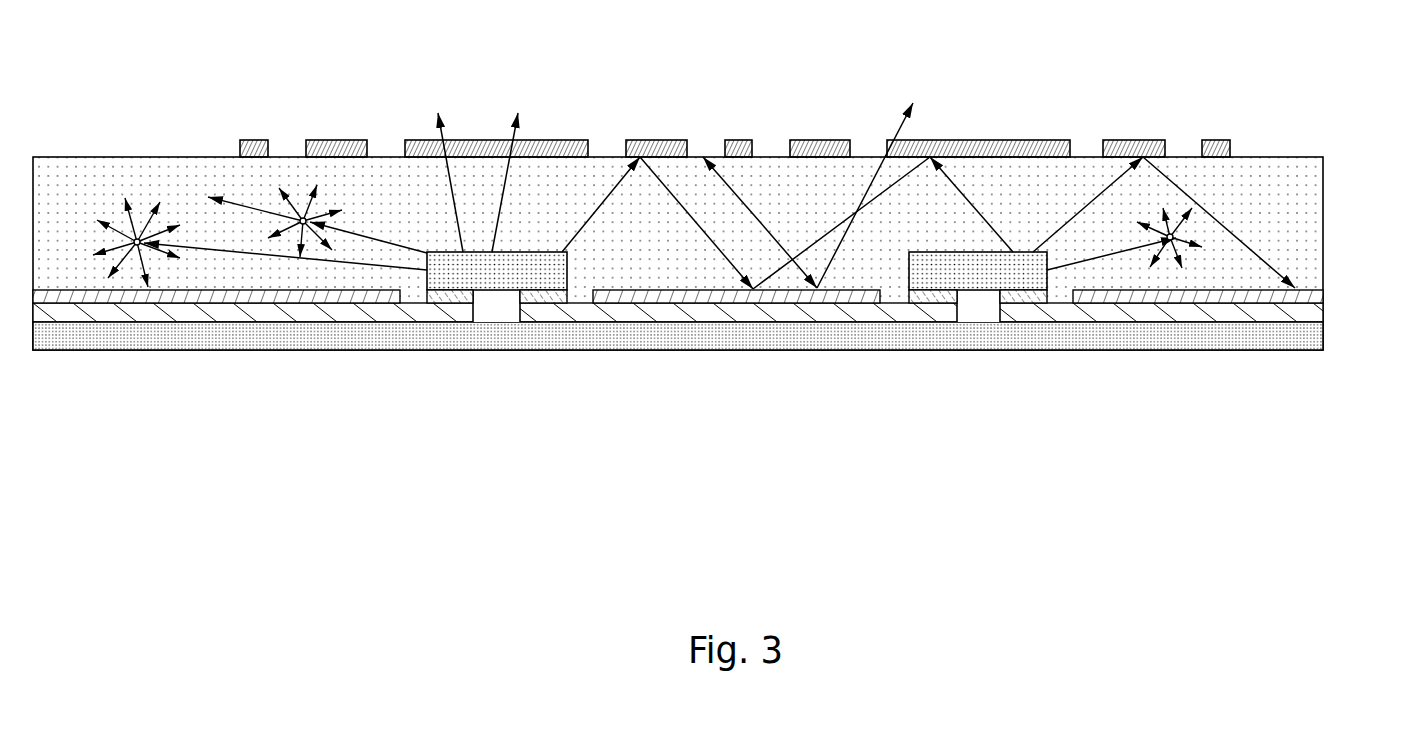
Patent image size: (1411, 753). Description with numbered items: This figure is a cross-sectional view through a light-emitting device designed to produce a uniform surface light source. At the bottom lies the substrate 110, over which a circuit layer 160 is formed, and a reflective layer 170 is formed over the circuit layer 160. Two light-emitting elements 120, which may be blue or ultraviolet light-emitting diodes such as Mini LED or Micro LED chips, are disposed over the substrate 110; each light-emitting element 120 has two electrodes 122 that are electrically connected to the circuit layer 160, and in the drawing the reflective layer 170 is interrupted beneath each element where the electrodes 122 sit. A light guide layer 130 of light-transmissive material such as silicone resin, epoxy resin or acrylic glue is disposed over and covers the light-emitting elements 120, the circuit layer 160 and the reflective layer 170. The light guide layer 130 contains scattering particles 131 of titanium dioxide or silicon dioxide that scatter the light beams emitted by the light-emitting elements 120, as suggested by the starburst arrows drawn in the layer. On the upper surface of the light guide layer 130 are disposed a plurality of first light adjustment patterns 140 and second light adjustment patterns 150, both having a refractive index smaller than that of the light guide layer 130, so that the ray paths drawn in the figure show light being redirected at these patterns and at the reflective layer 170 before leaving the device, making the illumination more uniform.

The substrate 110 is at (1320, 336).
The light-emitting element 120 is at (428, 283).
The electrode 122 is at (1017, 295).
The light guide layer 130 is at (1282, 163).
The scattering particle 131 is at (1176, 234).
The first light adjustment pattern 140 is at (987, 140).
The second light adjustment pattern 150 is at (1207, 140).
The circuit layer 160 is at (1320, 313).
The reflective layer 170 is at (1320, 297).